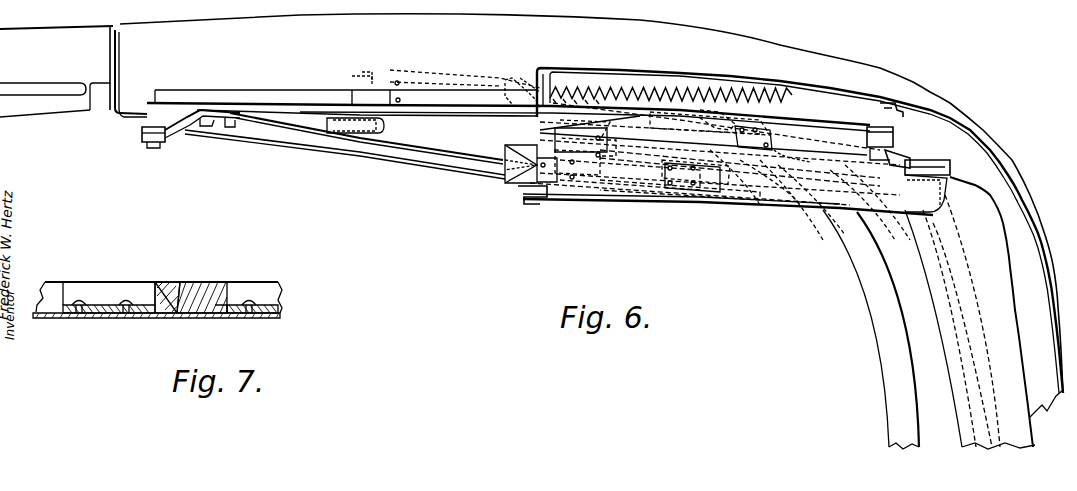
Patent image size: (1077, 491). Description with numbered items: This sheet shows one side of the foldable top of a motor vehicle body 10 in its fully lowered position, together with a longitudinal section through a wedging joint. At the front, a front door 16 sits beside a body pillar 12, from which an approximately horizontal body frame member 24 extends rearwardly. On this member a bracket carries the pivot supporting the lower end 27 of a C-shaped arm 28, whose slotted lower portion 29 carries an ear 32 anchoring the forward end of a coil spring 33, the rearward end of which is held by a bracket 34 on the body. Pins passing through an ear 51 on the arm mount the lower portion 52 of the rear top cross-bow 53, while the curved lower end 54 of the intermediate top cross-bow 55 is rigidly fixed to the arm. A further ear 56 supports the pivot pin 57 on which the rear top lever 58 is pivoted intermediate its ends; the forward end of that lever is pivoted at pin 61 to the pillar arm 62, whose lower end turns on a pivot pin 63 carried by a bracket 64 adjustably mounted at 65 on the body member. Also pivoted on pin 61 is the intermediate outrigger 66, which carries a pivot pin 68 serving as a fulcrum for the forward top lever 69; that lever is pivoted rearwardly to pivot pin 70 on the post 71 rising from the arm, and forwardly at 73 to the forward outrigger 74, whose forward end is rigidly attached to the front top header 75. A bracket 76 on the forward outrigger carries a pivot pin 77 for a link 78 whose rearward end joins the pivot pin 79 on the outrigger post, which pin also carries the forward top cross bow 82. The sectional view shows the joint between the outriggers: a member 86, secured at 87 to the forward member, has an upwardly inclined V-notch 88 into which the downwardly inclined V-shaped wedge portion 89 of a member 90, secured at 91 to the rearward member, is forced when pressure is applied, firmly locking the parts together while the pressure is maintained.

In FIG. 6, the motor vehicle body 10 is at (472, 13).
In FIG. 6, the front door 16 is at (42, 26).
In FIG. 6, the body pillar 12 is at (127, 119).
In FIG. 6, the C-shaped arm 28 is at (815, 100).
In FIG. 6, the ear 32 is at (352, 80).
In FIG. 6, the ear 51 is at (505, 83).
In FIG. 6, the lower portion of rear top cross-bow 52 is at (608, 122).
In FIG. 6, the intermediate outrigger 66 is at (635, 122).
In FIG. 7, the intermediate outrigger 66 is at (272, 318).
In FIG. 6, the coil spring 33 is at (686, 100).
In FIG. 6, the curved lower end of intermediate top cross-bow 54 is at (712, 100).
In FIG. 6, the ear 56 is at (765, 120).
In FIG. 6, the member 90 is at (605, 128).
In FIG. 7, the member 90 is at (218, 288).
In FIG. 6, the V-notch 88 is at (520, 139).
In FIG. 7, the V-notch 88 is at (168, 283).
In FIG. 6, the pivotal connection 73 is at (526, 205).
In FIG. 6, the pivot pin 61 is at (569, 186).
In FIG. 6, the forward top lever 69 is at (592, 199).
In FIG. 6, the rear top lever 58 is at (628, 182).
In FIG. 6, the bracket 76 is at (670, 185).
In FIG. 6, the pivot pin 77 is at (692, 195).
In FIG. 6, the pivot pin 68 is at (717, 198).
In FIG. 6, the pivot pin 57 is at (754, 205).
In FIG. 6, the link 78 is at (735, 205).
In FIG. 6, the forward outrigger 74 is at (773, 210).
In FIG. 7, the forward outrigger 74 is at (50, 320).
In FIG. 6, the pivot pin 79 is at (882, 212).
In FIG. 6, the member 86 is at (878, 127).
In FIG. 7, the member 86 is at (153, 283).
In FIG. 6, the bracket 34 is at (903, 113).
In FIG. 6, the V-shaped wedge portion 89 is at (895, 150).
In FIG. 7, the V-shaped wedge portion 89 is at (196, 285).
In FIG. 6, the post 71 is at (942, 160).
In FIG. 6, the pivot pin 70 is at (945, 195).
In FIG. 6, the rear top cross-bow 53 is at (872, 357).
In FIG. 6, the forward top cross bow 82 is at (950, 358).
In FIG. 6, the intermediate top cross-bow 55 is at (968, 294).
In FIG. 6, the front top header 75 is at (1022, 310).
In FIG. 6, the pivot pin 63 is at (155, 149).
In FIG. 6, the bracket 64 is at (186, 130).
In FIG. 6, the adjustable mounting means 65 is at (222, 128).
In FIG. 6, the body frame member 24 is at (290, 118).
In FIG. 6, the lower end of C-shaped arm 27 is at (324, 124).
In FIG. 6, the pillar arm 62 is at (415, 152).
In FIG. 6, the lower portion of C-shaped arm 29 is at (385, 126).
In FIG. 7, the fastening 87 is at (78, 300).
In FIG. 7, the fastening 91 is at (250, 300).